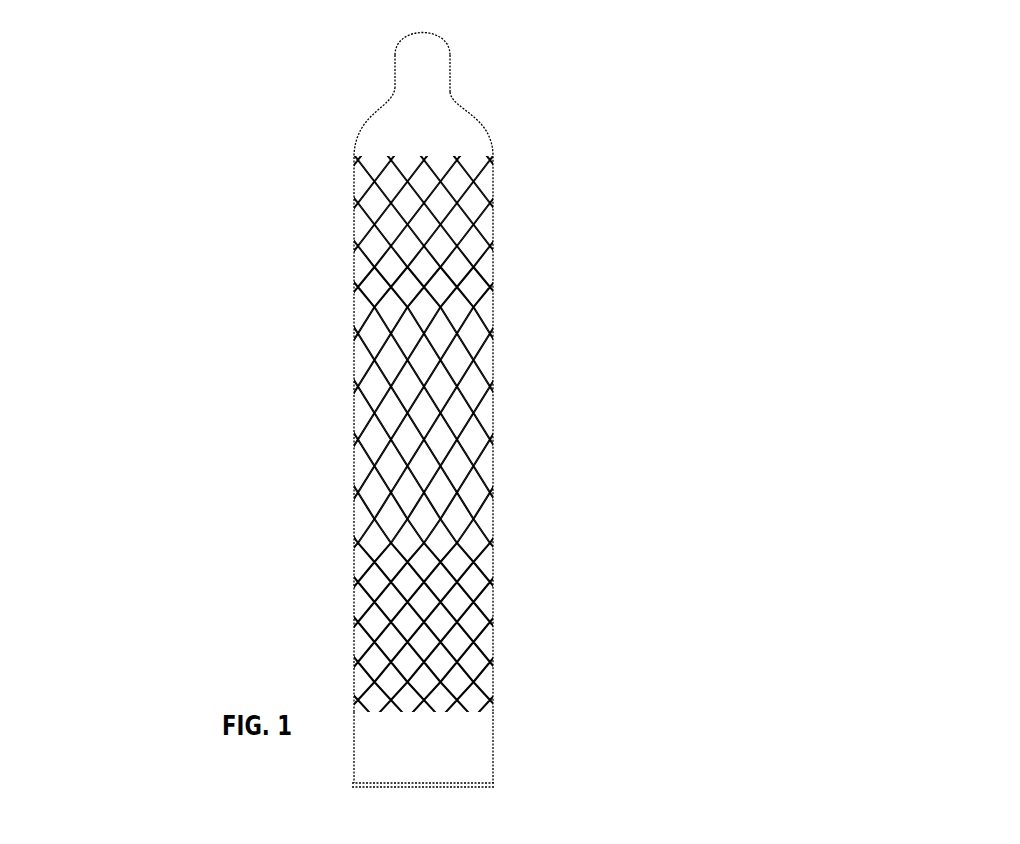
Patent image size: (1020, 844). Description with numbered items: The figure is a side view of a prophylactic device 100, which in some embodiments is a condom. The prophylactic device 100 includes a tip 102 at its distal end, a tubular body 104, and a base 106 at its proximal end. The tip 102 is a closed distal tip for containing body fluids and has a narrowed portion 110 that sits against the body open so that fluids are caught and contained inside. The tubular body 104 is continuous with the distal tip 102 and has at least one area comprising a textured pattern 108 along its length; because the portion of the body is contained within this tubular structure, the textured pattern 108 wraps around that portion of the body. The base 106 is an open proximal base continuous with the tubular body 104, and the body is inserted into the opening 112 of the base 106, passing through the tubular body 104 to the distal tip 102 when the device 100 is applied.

The prophylactic device 100 is at (171, 117).
The tip 102 is at (428, 60).
The tubular body 104 is at (473, 210).
The base 106 is at (463, 781).
The textured pattern 108 is at (472, 305).
The narrowed portion 110 is at (403, 26).
The opening 112 is at (452, 792).